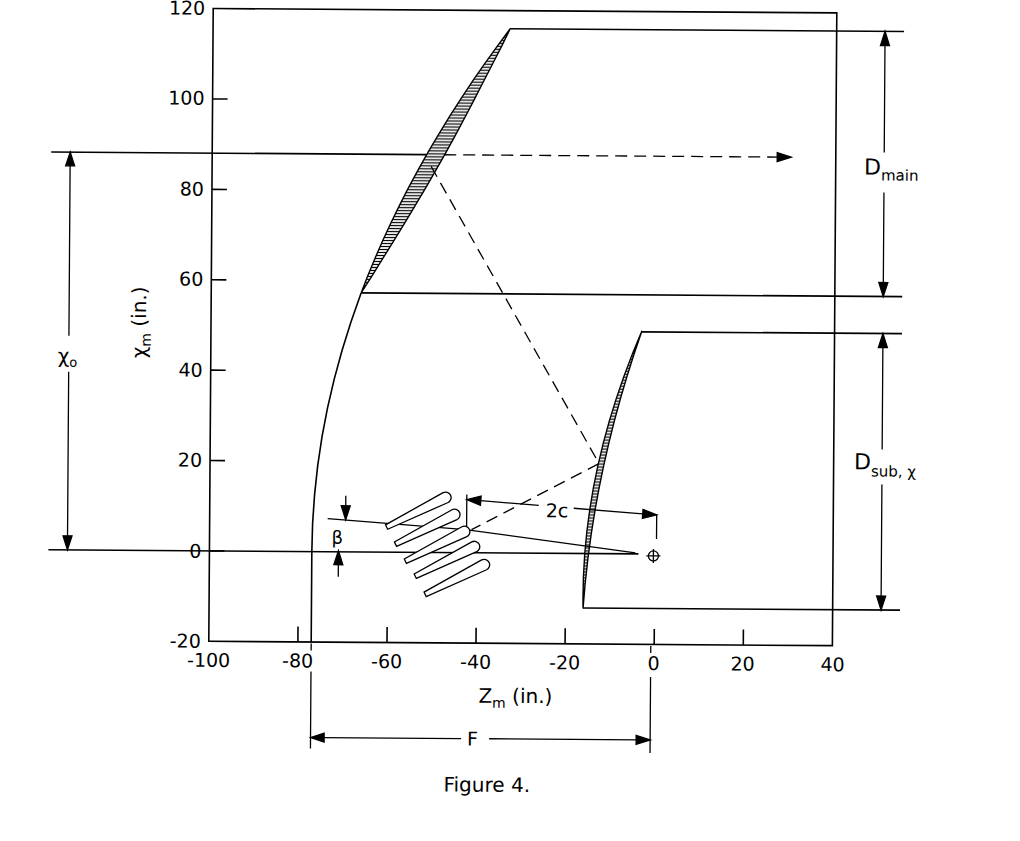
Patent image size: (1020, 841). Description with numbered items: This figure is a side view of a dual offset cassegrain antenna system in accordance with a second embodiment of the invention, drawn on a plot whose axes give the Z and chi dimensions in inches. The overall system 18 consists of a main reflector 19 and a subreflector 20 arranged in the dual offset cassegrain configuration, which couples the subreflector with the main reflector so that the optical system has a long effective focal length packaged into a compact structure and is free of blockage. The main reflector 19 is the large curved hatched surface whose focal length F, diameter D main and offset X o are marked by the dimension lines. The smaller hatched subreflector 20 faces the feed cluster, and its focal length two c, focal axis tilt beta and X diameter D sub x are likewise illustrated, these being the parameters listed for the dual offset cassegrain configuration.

The reflector antenna system 18 is at (308, 67).
The main reflector 19 is at (462, 95).
The subreflector 20 is at (628, 368).